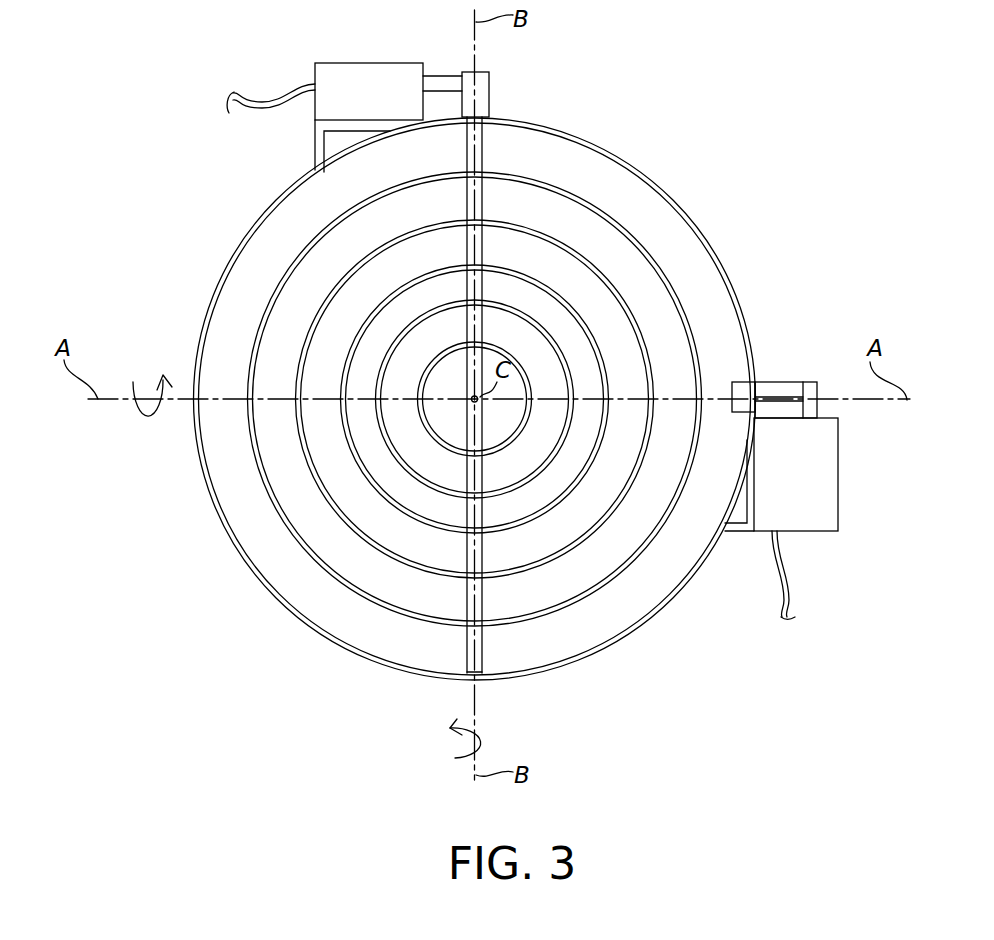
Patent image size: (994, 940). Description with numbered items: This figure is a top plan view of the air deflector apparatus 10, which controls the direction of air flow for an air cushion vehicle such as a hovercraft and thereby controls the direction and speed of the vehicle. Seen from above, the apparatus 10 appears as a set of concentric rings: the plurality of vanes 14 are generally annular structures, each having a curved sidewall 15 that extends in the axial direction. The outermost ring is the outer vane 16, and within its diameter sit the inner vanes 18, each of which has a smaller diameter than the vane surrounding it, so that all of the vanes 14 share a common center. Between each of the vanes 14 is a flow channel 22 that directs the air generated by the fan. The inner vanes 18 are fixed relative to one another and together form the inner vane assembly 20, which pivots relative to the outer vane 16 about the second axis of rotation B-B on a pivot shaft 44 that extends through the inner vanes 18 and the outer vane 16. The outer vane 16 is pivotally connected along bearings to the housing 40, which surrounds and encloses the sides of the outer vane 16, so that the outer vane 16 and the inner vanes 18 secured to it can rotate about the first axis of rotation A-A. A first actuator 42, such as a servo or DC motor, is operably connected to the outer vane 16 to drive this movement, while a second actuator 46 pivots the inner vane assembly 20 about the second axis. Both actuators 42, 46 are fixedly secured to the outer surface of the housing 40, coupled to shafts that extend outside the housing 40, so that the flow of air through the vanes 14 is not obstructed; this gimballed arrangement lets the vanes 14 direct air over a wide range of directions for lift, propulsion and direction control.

The air deflector apparatus 10 is at (703, 113).
The vanes 14 is at (637, 317).
The curved sidewall 15 is at (543, 182).
The outer vane 16 is at (635, 237).
The inner vanes 18 is at (310, 362).
The inner vane assembly 20 is at (350, 582).
The flow channel 22 is at (350, 490).
The housing 40 is at (245, 232).
The first actuator 42 is at (840, 487).
The pivot shaft 44 is at (478, 155).
The second actuator 46 is at (368, 75).